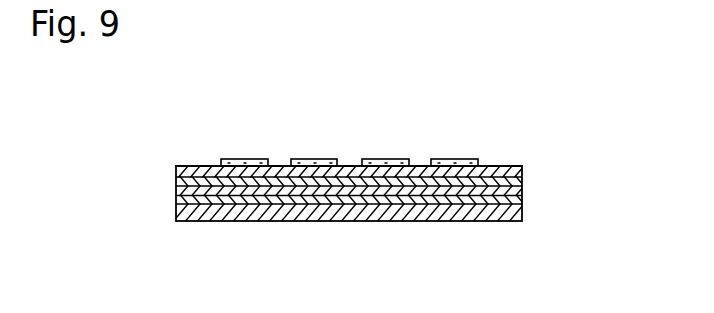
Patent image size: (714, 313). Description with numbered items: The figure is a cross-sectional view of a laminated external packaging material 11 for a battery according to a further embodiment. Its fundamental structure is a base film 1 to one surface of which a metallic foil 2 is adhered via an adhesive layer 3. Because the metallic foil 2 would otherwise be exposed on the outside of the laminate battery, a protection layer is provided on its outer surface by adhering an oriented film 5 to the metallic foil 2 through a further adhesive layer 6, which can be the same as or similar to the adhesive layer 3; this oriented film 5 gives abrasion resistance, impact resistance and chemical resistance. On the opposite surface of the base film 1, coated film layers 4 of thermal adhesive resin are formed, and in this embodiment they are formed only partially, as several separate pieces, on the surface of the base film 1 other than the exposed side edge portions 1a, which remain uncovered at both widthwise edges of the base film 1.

The laminated external packaging material 11 is at (434, 118).
The base film 1 is at (523, 171).
The exposed side edge portions 1a is at (498, 163).
The coated film layer 4 is at (467, 159).
The adhesive layer 3 is at (525, 182).
The metallic foil 2 is at (525, 192).
The adhesive layer 6 is at (525, 200).
The oriented film 5 is at (498, 217).